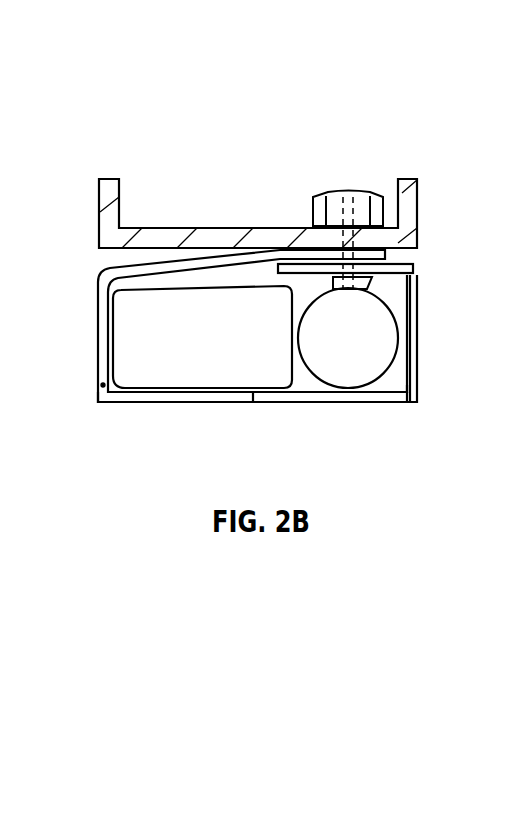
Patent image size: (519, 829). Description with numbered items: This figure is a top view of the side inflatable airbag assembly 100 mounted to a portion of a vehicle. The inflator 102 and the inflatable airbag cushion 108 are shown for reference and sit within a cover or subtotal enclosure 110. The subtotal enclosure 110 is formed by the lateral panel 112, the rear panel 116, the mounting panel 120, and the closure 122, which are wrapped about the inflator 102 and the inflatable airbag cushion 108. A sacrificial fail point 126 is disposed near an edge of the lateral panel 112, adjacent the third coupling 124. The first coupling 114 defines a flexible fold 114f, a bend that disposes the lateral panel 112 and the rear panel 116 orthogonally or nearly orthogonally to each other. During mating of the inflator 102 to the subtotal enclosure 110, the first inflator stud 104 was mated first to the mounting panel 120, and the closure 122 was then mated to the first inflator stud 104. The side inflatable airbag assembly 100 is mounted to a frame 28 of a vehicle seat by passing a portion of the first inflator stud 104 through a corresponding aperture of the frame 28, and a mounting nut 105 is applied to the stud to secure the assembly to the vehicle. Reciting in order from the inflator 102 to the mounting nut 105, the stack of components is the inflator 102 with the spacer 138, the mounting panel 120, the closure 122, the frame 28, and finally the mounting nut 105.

The side inflatable airbag assembly 100 is at (407, 83).
The frame 28 is at (100, 196).
The first inflator stud 104 is at (342, 190).
The mounting nut 105 is at (313, 213).
The mounting panel 120 is at (413, 267).
The closure 122 is at (98, 300).
The spacer 138 is at (372, 285).
The inflatable airbag cushion 108 is at (227, 350).
The rear panel 116 is at (417, 340).
The first coupling 114 is at (410, 397).
The flexible fold 114f is at (410, 397).
The inflator 102 is at (383, 372).
The subtotal enclosure 110 is at (170, 403).
The lateral panel 112 is at (262, 403).
The third coupling 124 is at (98, 402).
The sacrificial fail point 126 is at (97, 385).